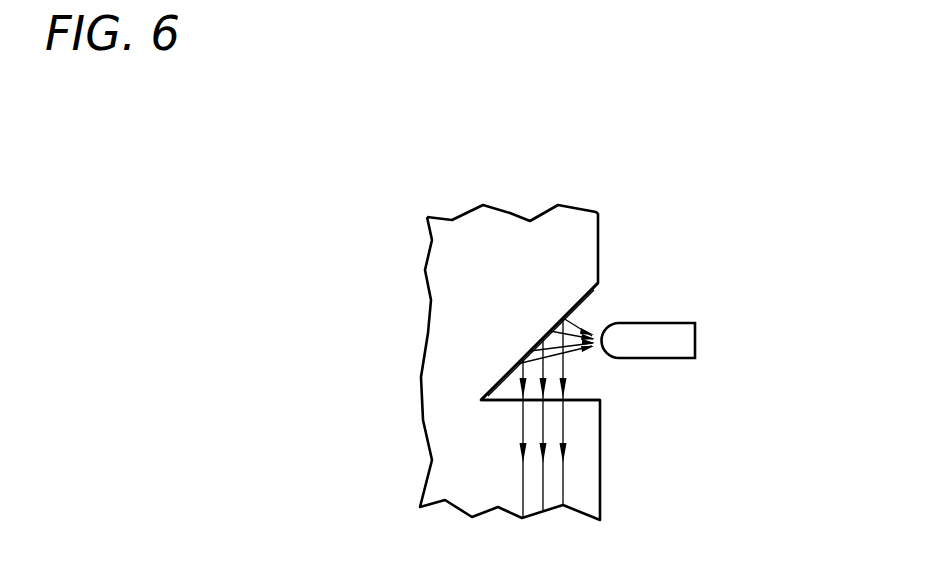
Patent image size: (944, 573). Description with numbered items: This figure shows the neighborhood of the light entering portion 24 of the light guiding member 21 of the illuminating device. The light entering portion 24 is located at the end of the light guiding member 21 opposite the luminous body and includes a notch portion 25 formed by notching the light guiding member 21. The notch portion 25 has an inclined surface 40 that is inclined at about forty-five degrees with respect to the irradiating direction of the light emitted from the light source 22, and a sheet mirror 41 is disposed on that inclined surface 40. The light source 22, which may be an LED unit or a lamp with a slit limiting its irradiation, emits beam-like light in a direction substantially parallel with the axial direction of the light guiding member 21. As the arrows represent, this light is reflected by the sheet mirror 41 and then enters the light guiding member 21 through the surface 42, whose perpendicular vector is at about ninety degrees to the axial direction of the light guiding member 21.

The light guiding member 21 is at (501, 243).
The light source 22 is at (687, 323).
The light entering portion 24 is at (616, 316).
The notch portion 25 is at (577, 393).
The inclined surface 40 is at (596, 306).
The sheet mirror 41 is at (592, 312).
The surface 42 is at (578, 400).